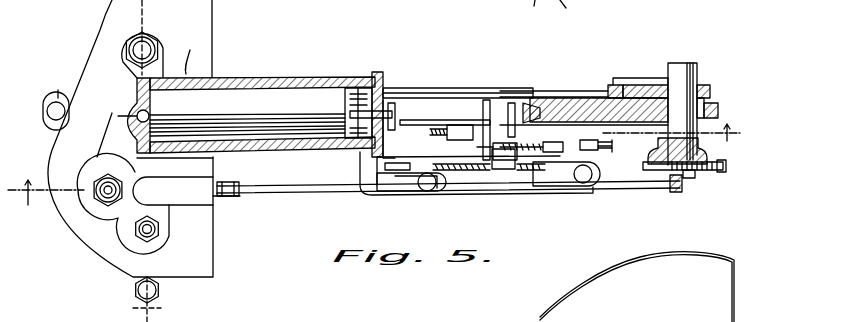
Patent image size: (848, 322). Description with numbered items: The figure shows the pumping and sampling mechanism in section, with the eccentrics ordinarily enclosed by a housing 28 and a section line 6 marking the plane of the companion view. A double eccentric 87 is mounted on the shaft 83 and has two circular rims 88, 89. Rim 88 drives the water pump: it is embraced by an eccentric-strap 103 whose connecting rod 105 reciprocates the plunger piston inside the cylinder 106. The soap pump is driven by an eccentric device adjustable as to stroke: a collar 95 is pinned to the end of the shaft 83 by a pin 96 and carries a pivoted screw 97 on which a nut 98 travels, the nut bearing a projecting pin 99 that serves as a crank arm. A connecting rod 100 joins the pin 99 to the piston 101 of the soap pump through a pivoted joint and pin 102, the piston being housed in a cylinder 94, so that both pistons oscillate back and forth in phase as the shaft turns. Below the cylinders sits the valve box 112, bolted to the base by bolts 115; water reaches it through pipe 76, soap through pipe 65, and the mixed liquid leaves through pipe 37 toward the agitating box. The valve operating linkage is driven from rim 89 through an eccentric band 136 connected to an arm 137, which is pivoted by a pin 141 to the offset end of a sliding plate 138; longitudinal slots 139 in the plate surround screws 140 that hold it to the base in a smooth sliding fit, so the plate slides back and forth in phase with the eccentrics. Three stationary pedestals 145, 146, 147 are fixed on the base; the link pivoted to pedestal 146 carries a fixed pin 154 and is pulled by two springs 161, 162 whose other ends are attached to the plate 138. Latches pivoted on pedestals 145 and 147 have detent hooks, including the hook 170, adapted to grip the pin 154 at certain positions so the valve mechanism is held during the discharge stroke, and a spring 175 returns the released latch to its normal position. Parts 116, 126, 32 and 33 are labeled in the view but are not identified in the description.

The section line 6 is at (377, 163).
The housing 28 is at (540, 303).
The bracket 32 is at (521, 13).
The bracket 33 is at (563, 11).
The pipe 37 is at (95, 200).
The pipe 65 is at (140, 238).
The pipe 76 is at (125, 50).
The shaft 83 is at (698, 66).
The double eccentric 87 is at (640, 83).
The eccentric rim 88 is at (718, 114).
The eccentric rim 89 is at (712, 86).
The cylinder 94 is at (183, 205).
The collar 95 is at (723, 165).
The pin 96 is at (708, 148).
The screw 97 is at (724, 174).
The nut 98 is at (690, 178).
The projecting pin 99 is at (673, 193).
The connecting rod 100 is at (322, 194).
The piston 101 is at (218, 198).
The pin 102 is at (243, 198).
The eccentric-strap 103 is at (712, 100).
The connecting rod 105 is at (405, 90).
The cylinder 106 is at (296, 79).
The valve box 112 is at (205, 37).
The bolts 115 is at (176, 291).
The pin 116 is at (578, 142).
The bolt 126 is at (104, 212).
The eccentric band 136 is at (612, 83).
The arm 137 is at (512, 85).
The sliding plate 138 is at (487, 198).
The longitudinal slots 139 is at (395, 198).
The screws 140 is at (424, 193).
The pin 141 is at (386, 88).
The pedestal 145 is at (440, 105).
The pedestal 146 is at (522, 98).
The pedestal 147 is at (553, 178).
The fixed pin 154 is at (470, 118).
The spring 161 is at (455, 197).
The spring 162 is at (528, 197).
The detent hook 170 is at (590, 162).
The spring 175 is at (435, 119).